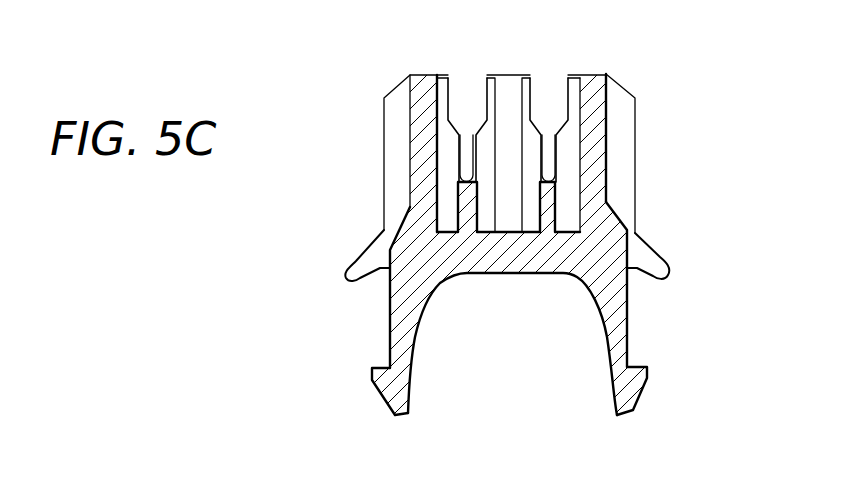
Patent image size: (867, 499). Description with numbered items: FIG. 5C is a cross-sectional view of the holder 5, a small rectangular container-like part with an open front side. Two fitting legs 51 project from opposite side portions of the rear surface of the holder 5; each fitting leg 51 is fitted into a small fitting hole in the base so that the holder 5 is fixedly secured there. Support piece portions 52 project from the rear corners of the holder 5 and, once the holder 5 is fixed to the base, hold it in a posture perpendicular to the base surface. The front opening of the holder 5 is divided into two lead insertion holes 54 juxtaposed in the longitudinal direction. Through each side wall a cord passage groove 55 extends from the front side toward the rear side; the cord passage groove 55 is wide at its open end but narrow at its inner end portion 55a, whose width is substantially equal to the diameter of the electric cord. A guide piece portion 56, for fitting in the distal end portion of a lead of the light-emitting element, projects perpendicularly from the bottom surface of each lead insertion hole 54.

The holder 5 is at (637, 112).
The fitting leg 51 is at (405, 378).
The support piece portion 52 is at (663, 262).
The lead insertion hole 54 is at (448, 136).
The cord passage groove 55 is at (465, 98).
The inner end portion 55a is at (463, 165).
The guide piece portion 56 is at (463, 212).